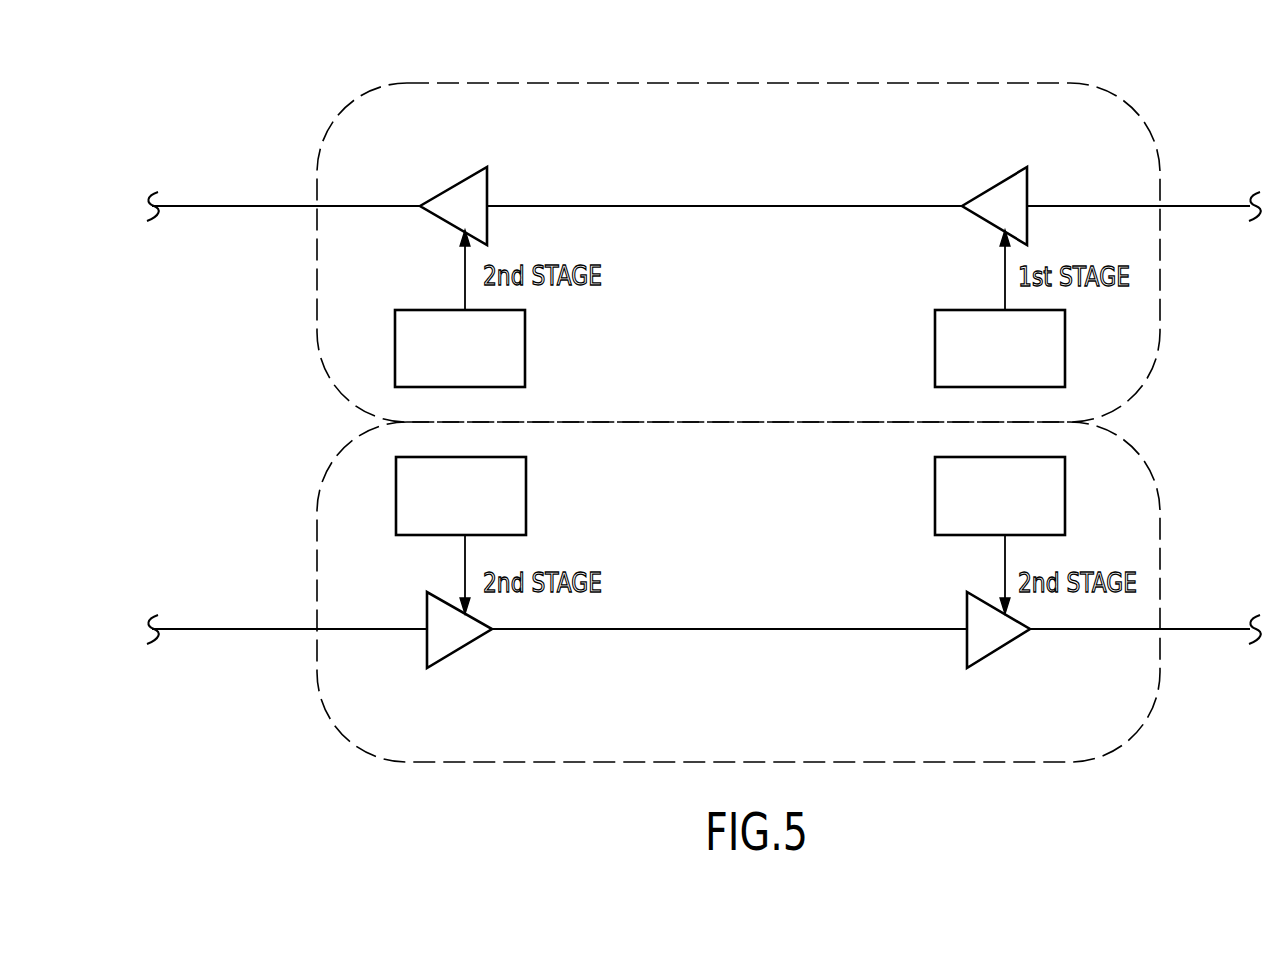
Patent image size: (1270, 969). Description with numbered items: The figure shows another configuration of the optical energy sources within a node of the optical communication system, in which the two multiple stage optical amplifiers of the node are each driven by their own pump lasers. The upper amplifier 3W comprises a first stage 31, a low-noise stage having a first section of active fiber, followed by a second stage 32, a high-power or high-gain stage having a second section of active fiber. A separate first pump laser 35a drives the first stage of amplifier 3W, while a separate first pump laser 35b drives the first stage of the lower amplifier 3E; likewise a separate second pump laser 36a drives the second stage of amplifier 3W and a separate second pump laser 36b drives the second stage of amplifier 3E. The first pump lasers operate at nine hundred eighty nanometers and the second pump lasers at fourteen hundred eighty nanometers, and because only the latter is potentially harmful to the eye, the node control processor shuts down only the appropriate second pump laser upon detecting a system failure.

The amplifier 3W is at (1100, 125).
The amplifier 3E is at (1100, 727).
The first stage 31 is at (1018, 219).
The second stage 32 is at (477, 219).
The first pump laser 35a is at (1000, 308).
The second pump laser 36a is at (460, 308).
The first pump laser 35b is at (461, 535).
The second pump laser 36b is at (1000, 535).